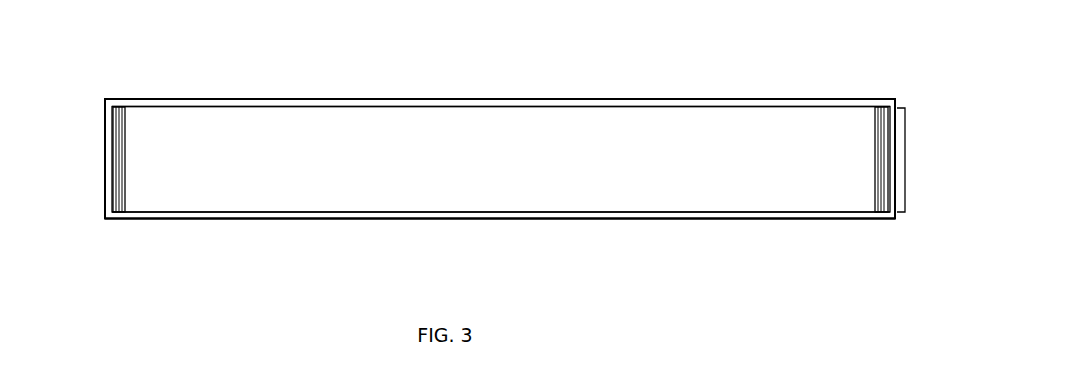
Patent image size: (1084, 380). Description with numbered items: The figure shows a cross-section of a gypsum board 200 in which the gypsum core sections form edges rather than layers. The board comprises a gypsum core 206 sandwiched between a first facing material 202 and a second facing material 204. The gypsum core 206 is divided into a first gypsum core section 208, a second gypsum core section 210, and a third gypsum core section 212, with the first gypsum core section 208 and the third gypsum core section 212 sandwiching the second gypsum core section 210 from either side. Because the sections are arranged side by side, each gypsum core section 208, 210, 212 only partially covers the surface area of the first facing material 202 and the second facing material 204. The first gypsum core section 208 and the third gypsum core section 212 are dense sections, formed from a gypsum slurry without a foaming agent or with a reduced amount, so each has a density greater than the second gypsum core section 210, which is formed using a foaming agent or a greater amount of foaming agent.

The gypsum board 200 is at (748, 88).
The first facing material 202 is at (238, 213).
The second facing material 204 is at (580, 103).
The gypsum core 206 is at (905, 158).
The first gypsum core section 208 is at (112, 203).
The second gypsum core section 210 is at (407, 120).
The third gypsum core section 212 is at (868, 207).